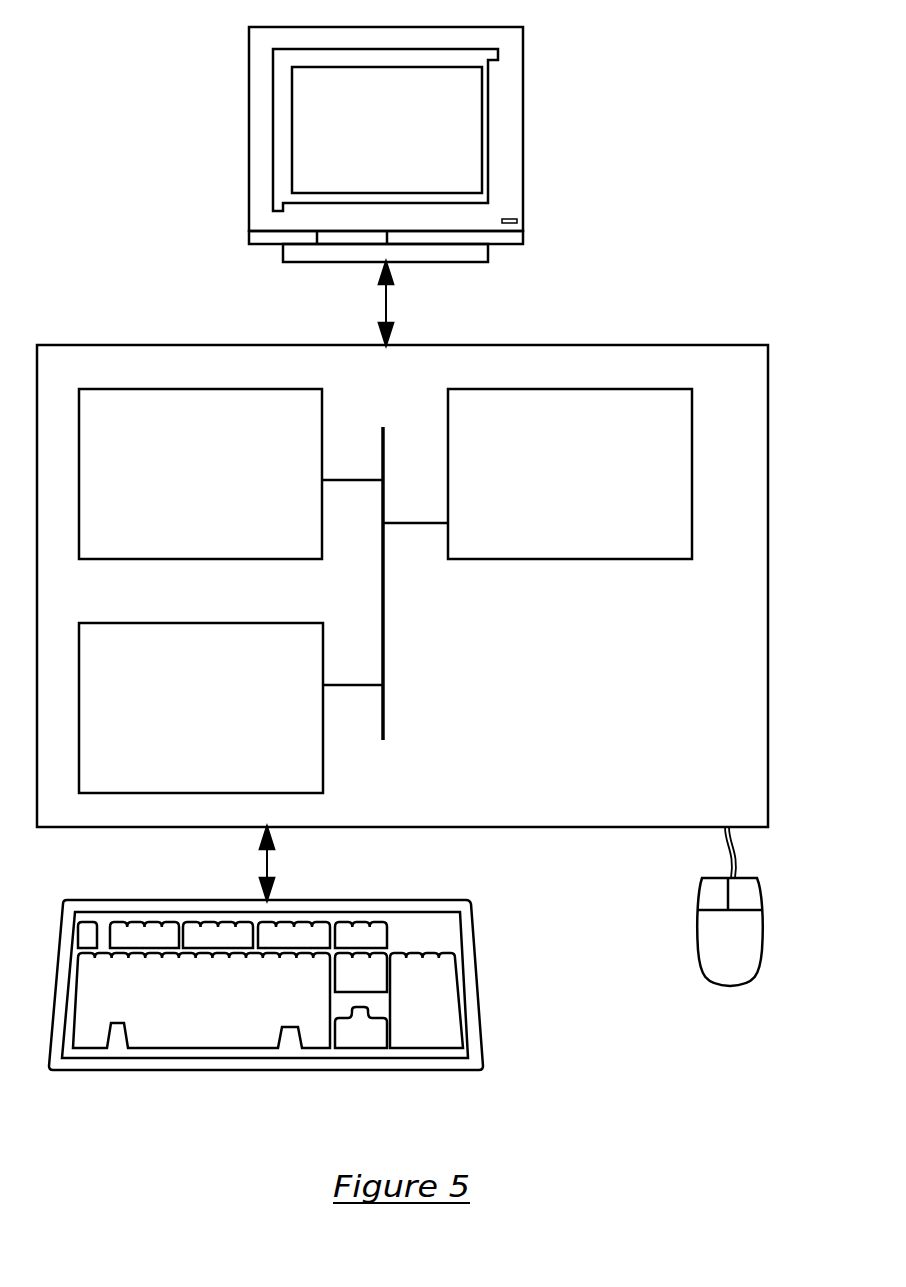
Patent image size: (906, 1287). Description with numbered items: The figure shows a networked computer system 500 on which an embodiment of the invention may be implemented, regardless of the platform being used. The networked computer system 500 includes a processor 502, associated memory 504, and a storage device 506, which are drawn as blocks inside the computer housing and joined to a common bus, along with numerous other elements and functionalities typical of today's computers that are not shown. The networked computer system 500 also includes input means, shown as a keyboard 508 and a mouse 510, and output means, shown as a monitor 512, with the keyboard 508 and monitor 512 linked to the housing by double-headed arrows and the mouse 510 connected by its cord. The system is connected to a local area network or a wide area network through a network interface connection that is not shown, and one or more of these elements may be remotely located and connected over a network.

The networked computer system 500 is at (736, 220).
The processor 502 is at (596, 478).
The associated memory 504 is at (223, 488).
The storage device 506 is at (220, 723).
The keyboard 508 is at (215, 1028).
The mouse 510 is at (751, 957).
The monitor 512 is at (408, 148).